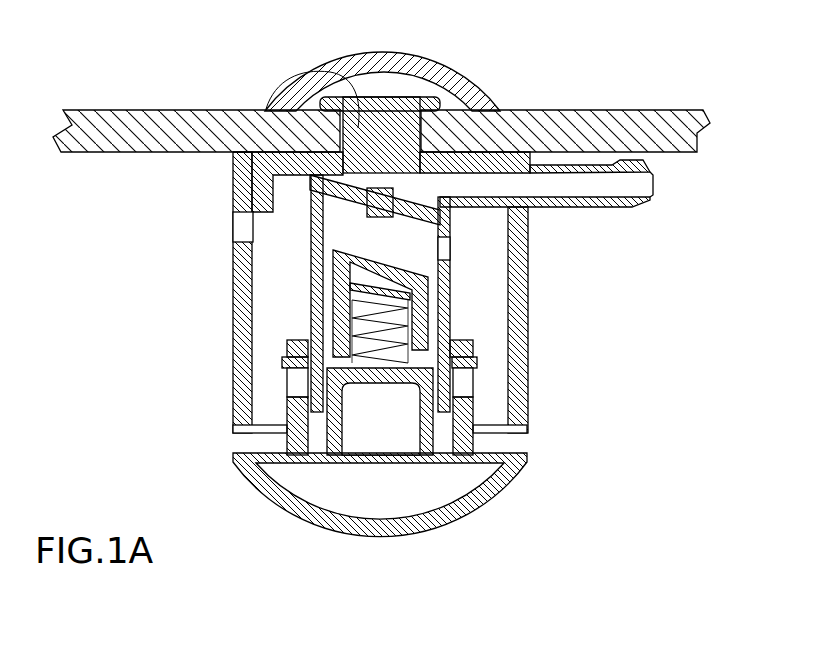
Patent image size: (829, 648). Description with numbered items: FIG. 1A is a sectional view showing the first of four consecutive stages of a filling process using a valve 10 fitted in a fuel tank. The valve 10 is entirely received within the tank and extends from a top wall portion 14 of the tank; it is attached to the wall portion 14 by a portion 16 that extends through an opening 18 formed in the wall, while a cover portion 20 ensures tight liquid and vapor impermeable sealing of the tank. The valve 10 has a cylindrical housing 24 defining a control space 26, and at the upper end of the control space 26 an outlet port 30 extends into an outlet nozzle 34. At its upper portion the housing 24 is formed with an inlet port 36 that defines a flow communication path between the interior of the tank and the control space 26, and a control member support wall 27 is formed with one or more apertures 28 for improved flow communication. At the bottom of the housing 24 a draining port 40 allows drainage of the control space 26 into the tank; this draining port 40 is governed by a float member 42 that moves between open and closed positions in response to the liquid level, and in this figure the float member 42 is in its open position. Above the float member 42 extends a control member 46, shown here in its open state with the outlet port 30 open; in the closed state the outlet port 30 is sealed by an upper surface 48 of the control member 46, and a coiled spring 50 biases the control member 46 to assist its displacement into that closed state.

The valve 10 is at (646, 342).
The top wall portion 14 is at (153, 112).
The portion 16 is at (450, 68).
The opening 18 is at (313, 68).
The cover portion 20 is at (377, 53).
The cylindrical housing 24 is at (530, 250).
The control space 26 is at (485, 300).
The control member support wall 27 is at (311, 276).
The apertures 28 is at (449, 247).
The outlet port 30 is at (388, 195).
The outlet nozzle 34 is at (593, 205).
The inlet port 36 is at (243, 222).
The draining port 40 is at (267, 430).
The float member 42 is at (477, 517).
The control member 46 is at (343, 297).
The upper surface 48 is at (397, 270).
The coiled spring 50 is at (450, 324).